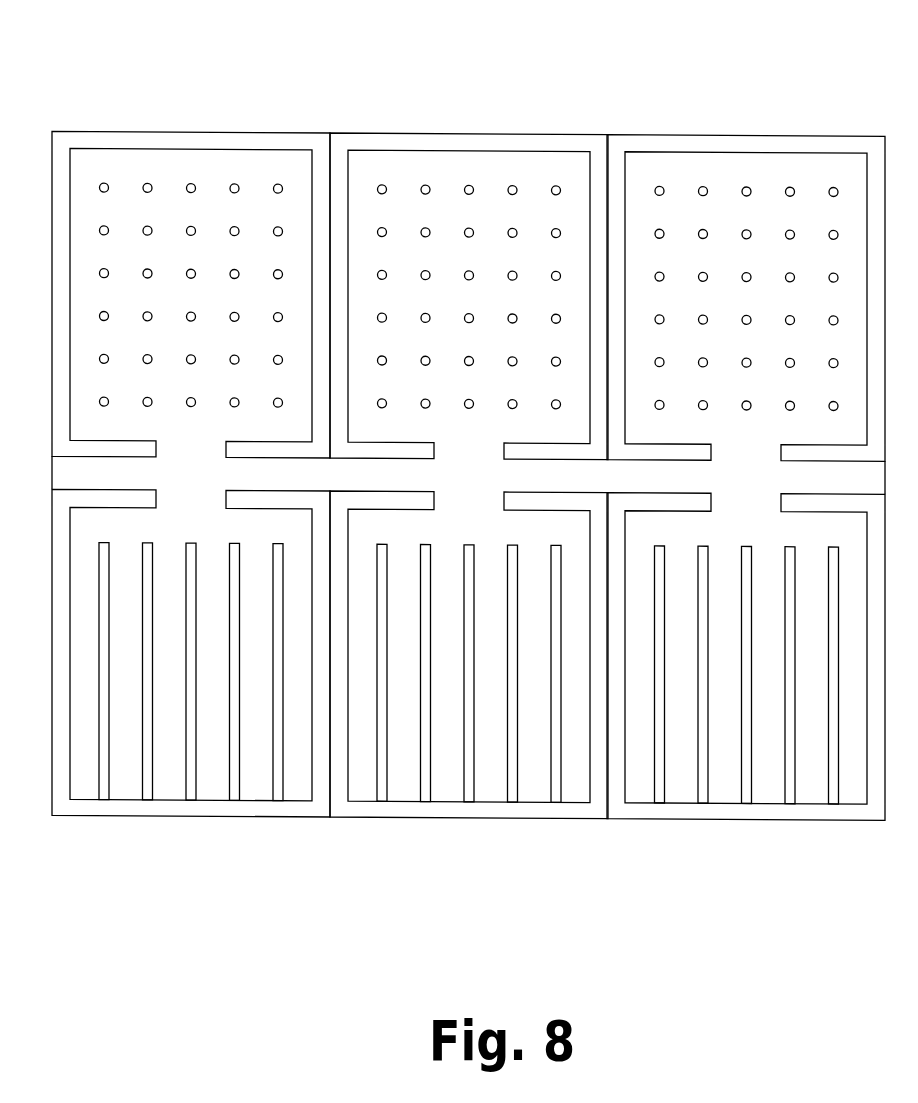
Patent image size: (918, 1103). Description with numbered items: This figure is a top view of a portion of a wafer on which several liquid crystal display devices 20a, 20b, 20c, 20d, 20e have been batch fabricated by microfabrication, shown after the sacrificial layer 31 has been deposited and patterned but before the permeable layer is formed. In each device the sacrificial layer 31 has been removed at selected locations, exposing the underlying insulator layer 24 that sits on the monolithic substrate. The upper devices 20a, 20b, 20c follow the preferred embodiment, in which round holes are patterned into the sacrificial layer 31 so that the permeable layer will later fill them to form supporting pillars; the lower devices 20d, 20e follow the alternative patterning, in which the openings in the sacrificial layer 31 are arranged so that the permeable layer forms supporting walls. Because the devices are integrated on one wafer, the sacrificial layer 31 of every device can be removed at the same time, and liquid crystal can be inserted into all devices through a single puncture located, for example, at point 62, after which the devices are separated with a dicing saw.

The liquid crystal display device 20a is at (176, 52).
The liquid crystal display device 20b is at (454, 52).
The liquid crystal display device 20c is at (732, 52).
The liquid crystal display device 20d is at (189, 896).
The liquid crystal display device 20e is at (467, 896).
The insulator layer 24 is at (190, 131).
The sacrificial layer 31 is at (120, 148).
The puncture point 62 is at (50, 472).